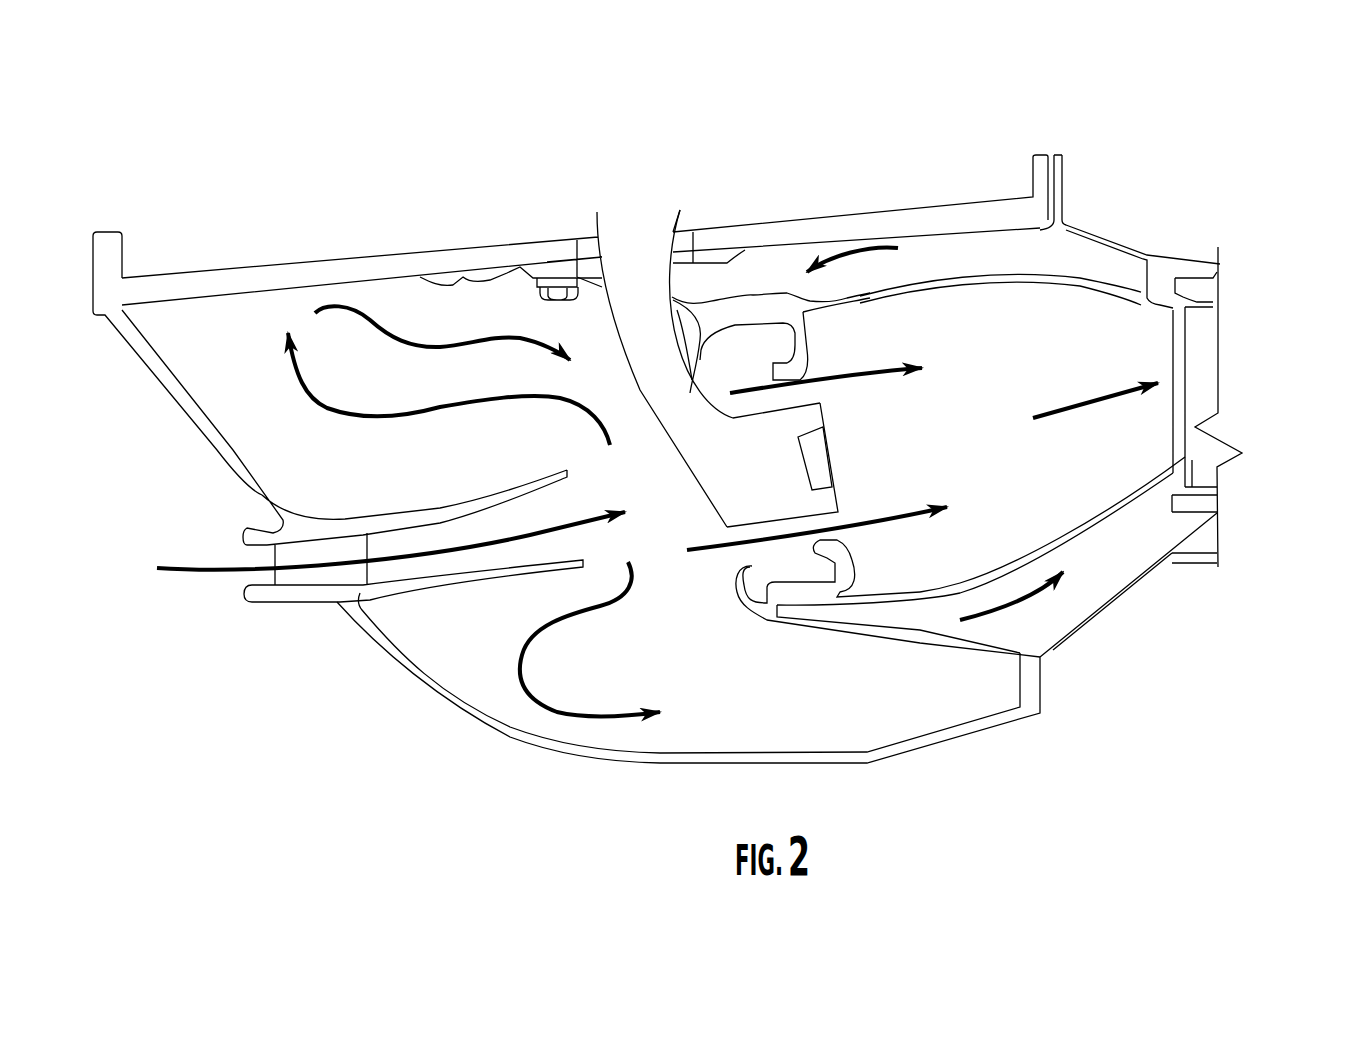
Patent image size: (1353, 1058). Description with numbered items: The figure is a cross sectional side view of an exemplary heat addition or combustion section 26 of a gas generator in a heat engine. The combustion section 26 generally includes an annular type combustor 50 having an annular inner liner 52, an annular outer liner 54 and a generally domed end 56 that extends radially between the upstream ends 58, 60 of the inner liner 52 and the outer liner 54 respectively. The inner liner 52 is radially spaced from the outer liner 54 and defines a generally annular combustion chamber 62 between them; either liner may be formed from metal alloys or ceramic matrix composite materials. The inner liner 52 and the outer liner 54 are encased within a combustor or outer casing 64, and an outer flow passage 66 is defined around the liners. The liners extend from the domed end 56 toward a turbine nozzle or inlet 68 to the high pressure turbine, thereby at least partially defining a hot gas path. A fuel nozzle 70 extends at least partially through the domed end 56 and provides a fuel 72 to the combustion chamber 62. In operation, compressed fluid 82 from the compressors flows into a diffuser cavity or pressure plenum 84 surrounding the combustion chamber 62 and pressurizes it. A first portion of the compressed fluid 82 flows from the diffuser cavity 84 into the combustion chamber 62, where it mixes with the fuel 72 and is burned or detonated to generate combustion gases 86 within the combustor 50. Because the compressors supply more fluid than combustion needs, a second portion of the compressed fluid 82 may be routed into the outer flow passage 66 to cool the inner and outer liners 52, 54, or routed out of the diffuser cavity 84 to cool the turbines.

The combustion section 26 is at (845, 130).
The annular type combustor 50 is at (942, 218).
The annular inner liner 52 is at (1015, 557).
The annular outer liner 54 is at (880, 300).
The domed end 56 is at (735, 597).
The upstream end of the inner liner 58 is at (813, 617).
The upstream end of the outer liner 60 is at (753, 288).
The combustion chamber 62 is at (984, 407).
The outer casing 64 is at (1003, 185).
The outer flow passage 66 is at (1065, 258).
The turbine nozzle or inlet 68 is at (1197, 363).
The fuel nozzle 70 is at (782, 465).
The fuel 72 is at (893, 498).
The compressed fluid 82 is at (188, 575).
The diffuser cavity or pressure plenum 84 is at (448, 318).
The combustion gases 86 is at (1080, 393).